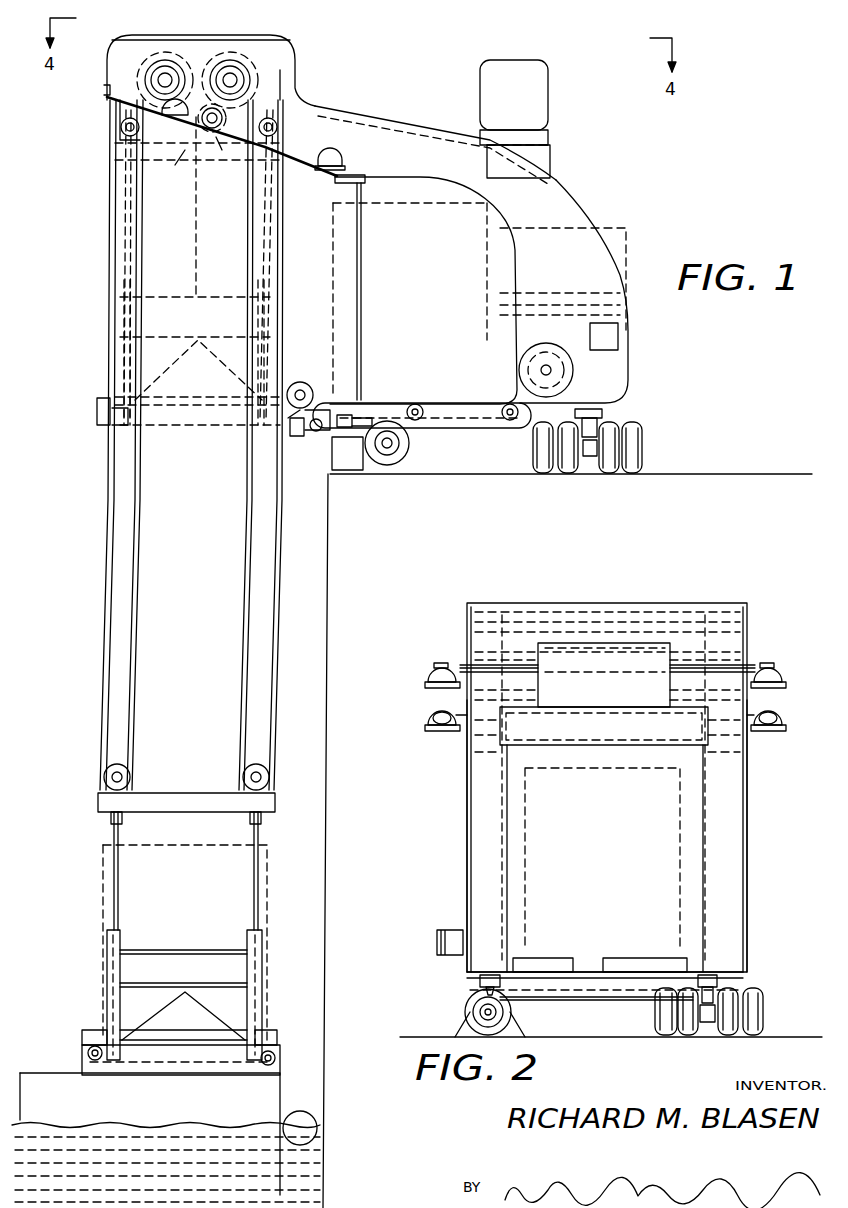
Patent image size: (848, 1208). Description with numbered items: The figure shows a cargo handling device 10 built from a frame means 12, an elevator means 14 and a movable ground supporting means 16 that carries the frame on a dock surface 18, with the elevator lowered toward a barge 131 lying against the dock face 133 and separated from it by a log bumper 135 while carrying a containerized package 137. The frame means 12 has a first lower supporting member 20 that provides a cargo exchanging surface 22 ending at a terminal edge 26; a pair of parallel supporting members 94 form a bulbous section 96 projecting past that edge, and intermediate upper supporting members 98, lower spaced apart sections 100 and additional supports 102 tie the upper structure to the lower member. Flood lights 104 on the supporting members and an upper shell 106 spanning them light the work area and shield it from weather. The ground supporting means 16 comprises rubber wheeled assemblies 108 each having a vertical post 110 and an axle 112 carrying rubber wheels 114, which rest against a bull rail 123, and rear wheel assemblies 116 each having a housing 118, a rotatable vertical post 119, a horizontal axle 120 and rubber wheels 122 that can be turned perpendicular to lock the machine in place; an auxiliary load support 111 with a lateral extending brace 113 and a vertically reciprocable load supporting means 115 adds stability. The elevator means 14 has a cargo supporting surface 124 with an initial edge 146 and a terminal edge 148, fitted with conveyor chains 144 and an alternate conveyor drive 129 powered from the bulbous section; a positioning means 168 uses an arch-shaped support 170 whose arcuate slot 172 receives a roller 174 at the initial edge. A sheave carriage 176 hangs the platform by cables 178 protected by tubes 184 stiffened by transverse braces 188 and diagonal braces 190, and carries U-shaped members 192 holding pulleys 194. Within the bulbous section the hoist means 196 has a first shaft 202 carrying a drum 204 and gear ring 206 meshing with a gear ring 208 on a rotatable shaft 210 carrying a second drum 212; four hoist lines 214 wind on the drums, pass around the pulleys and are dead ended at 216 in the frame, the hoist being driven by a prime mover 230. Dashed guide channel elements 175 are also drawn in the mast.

In FIG. 1, the cargo handling device 10 is at (640, 166).
In FIG. 2, the cargo handling device 10 is at (762, 604).
In FIG. 1, the frame means 12 is at (410, 95).
In FIG. 2, the frame means 12 is at (686, 603).
In FIG. 1, the elevator means 14 is at (100, 945).
In FIG. 1, the movable ground supporting means 16 is at (505, 448).
In FIG. 1, the dock surface 18 is at (688, 472).
In FIG. 1, the first lower supporting member 20 is at (460, 430).
In FIG. 2, the first lower supporting member 20 is at (555, 972).
In FIG. 1, the cargo exchanging surface 22 is at (488, 398).
In FIG. 2, the cargo exchanging surface 22 is at (622, 968).
In FIG. 1, the terminal edge 26 is at (319, 443).
In FIG. 1, the parallel supporting members 94 is at (325, 98).
In FIG. 2, the parallel supporting members 94 is at (752, 663).
In FIG. 1, the bulbous section 96 is at (280, 42).
In FIG. 2, the bulbous section 96 is at (578, 603).
In FIG. 1, the intermediate upper supporting members 98 is at (400, 130).
In FIG. 1, the lower spaced apart sections 100 is at (540, 190).
In FIG. 2, the lower spaced apart sections 100 is at (475, 766).
In FIG. 1, the additional supports 102 is at (352, 270).
In FIG. 1, the flood lights 104 is at (335, 155).
In FIG. 2, the flood lights 104 is at (430, 712).
In FIG. 1, the upper shell 106 is at (360, 115).
In FIG. 2, the upper shell 106 is at (498, 662).
In FIG. 1, the rubber wheeled assemblies 108 is at (385, 470).
In FIG. 1, the vertical post 110 is at (402, 443).
In FIG. 1, the auxiliary load support 111 is at (360, 408).
In FIG. 1, the axle 112 is at (400, 452).
In FIG. 1, the lateral extending brace 113 is at (368, 410).
In FIG. 1, the rubber wheels 114 is at (395, 465).
In FIG. 1, the load supporting means 115 is at (320, 460).
In FIG. 1, the rear wheel assemblies 116 is at (638, 418).
In FIG. 2, the rear wheel assemblies 116 is at (768, 990).
In FIG. 1, the housing 118 is at (600, 425).
In FIG. 2, the housing 118 is at (478, 1005).
In FIG. 1, the vertical post 119 is at (588, 412).
In FIG. 2, the vertical post 119 is at (478, 980).
In FIG. 1, the horizontal axle 120 is at (640, 440).
In FIG. 2, the horizontal axle 120 is at (470, 1020).
In FIG. 1, the rubber wheels 122 is at (550, 470).
In FIG. 2, the rubber wheels 122 is at (512, 1024).
In FIG. 1, the bull rail 123 is at (355, 455).
In FIG. 1, the cargo supporting surface 124 is at (198, 425).
In FIG. 1, the alternate conveyor drive 129 is at (222, 152).
In FIG. 1, the barge 131 is at (42, 1068).
In FIG. 1, the dock face 133 is at (198, 205).
In FIG. 1, the log bumper 135 is at (298, 1112).
In FIG. 1, the containerized package 137 is at (435, 202).
In FIG. 2, the containerized package 137 is at (632, 772).
In FIG. 1, the conveyor chains 144 is at (192, 1040).
In FIG. 1, the initial edge 146 is at (296, 388).
In FIG. 1, the terminal edge 148 is at (90, 422).
In FIG. 1, the positioning means 168 is at (297, 380).
In FIG. 1, the arch-shaped support 170 is at (318, 390).
In FIG. 1, the arcuate slot 172 is at (297, 432).
In FIG. 1, the roller 174 is at (305, 438).
In FIG. 1, the guide channel 175 is at (108, 225).
In FIG. 1, the sheave carriage 176 is at (190, 170).
In FIG. 1, the cables 178 is at (110, 815).
In FIG. 1, the tubes 184 is at (100, 935).
In FIG. 1, the transverse braces 188 is at (162, 945).
In FIG. 1, the diagonal braces 190 is at (150, 1022).
In FIG. 1, the U-shaped members 192 is at (112, 138).
In FIG. 1, the pulleys 194 is at (118, 122).
In FIG. 1, the hoist means 196 is at (185, 150).
In FIG. 1, the first shaft 202 is at (150, 62).
In FIG. 1, the drum 204 is at (160, 55).
In FIG. 1, the gear ring 206 is at (108, 42).
In FIG. 1, the gear ring 208 is at (306, 29).
In FIG. 1, the rotatable shaft 210 is at (240, 58).
In FIG. 1, the second drum 212 is at (222, 55).
In FIG. 1, the hoist lines 214 is at (105, 503).
In FIG. 1, the dead end 216 is at (88, 66).
In FIG. 1, the prime mover 230 is at (548, 80).
In FIG. 2, the prime mover 230 is at (668, 652).